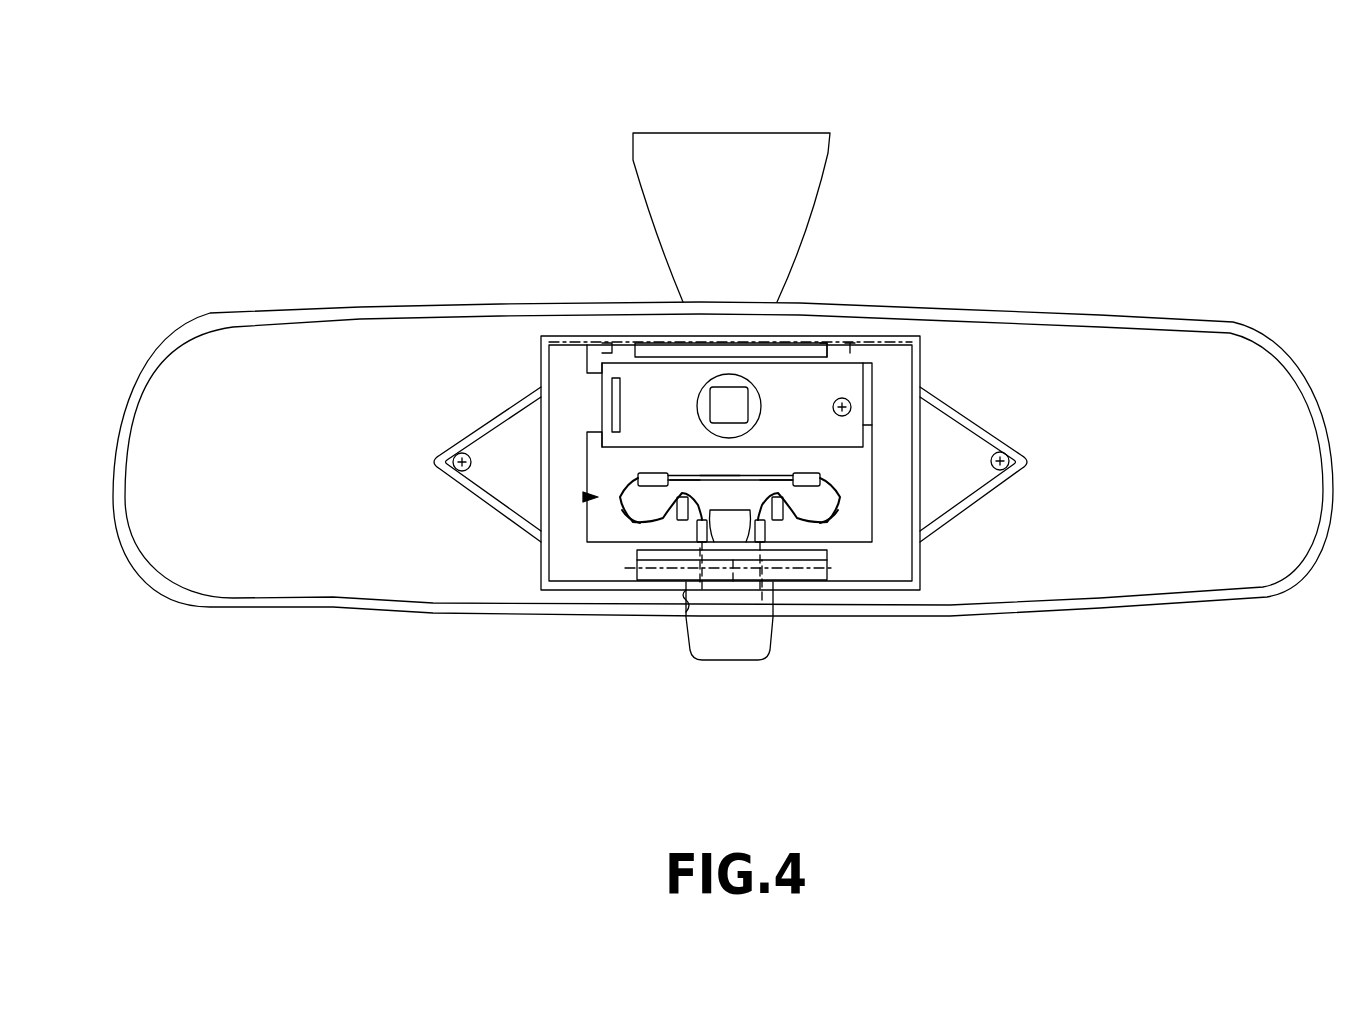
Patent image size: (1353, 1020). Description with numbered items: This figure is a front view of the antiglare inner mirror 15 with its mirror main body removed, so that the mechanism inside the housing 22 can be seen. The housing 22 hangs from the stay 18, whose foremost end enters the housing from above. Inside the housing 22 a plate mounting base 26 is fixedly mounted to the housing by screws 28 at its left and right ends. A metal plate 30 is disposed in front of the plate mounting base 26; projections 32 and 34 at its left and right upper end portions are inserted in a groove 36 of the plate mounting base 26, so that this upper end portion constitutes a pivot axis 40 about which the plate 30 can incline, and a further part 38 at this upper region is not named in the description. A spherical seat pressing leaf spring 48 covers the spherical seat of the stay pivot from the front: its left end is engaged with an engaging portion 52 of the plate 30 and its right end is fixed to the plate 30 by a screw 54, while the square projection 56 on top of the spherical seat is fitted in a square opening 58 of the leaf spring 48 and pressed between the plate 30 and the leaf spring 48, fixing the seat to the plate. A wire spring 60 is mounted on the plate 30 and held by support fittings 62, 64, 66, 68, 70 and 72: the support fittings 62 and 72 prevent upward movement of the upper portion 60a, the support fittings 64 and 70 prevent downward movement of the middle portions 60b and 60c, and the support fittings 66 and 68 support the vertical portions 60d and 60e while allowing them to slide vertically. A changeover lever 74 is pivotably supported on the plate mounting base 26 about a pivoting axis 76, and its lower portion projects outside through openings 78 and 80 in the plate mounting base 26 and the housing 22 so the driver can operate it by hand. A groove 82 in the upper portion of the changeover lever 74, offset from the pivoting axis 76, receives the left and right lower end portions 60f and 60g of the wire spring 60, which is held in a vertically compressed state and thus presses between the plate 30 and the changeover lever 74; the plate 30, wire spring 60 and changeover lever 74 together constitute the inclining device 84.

The rearview mirror assembly 15 is at (1088, 90).
The stay 18 is at (790, 147).
The housing 22 is at (1077, 312).
The plate mounting base 26 is at (990, 500).
The screws 28 is at (461, 452).
The plate 30 is at (860, 485).
The projection 32 is at (630, 352).
The projection 34 is at (857, 356).
The groove 36 is at (598, 338).
The cover edge 38 is at (845, 352).
The pivot axis 40 is at (560, 338).
The spherical seat pressing leaf spring 48 is at (855, 430).
The engaging portion 52 is at (612, 402).
The screw 54 is at (851, 404).
The projection 56 is at (742, 402).
The square opening 58 is at (722, 392).
The wire spring 60 is at (857, 487).
The upper portion 60a is at (718, 474).
The middle portion 60b is at (690, 473).
The middle portion 60c is at (815, 473).
The vertical portion 60d is at (707, 547).
The vertical portion 60e is at (770, 600).
The lower end portion 60f is at (700, 582).
The lower end portion 60g is at (762, 600).
The support fitting 62 is at (628, 520).
The support fitting 64 is at (684, 522).
The support fitting 66 is at (697, 528).
The support fitting 68 is at (780, 510).
The support fitting 70 is at (810, 490).
The support fitting 72 is at (835, 520).
The changeover lever 74 is at (735, 667).
The pivoting axis 76 is at (697, 542).
The opening 78 is at (680, 585).
The opening 80 is at (685, 605).
The groove 82 is at (733, 582).
The inclining device 84 is at (592, 497).